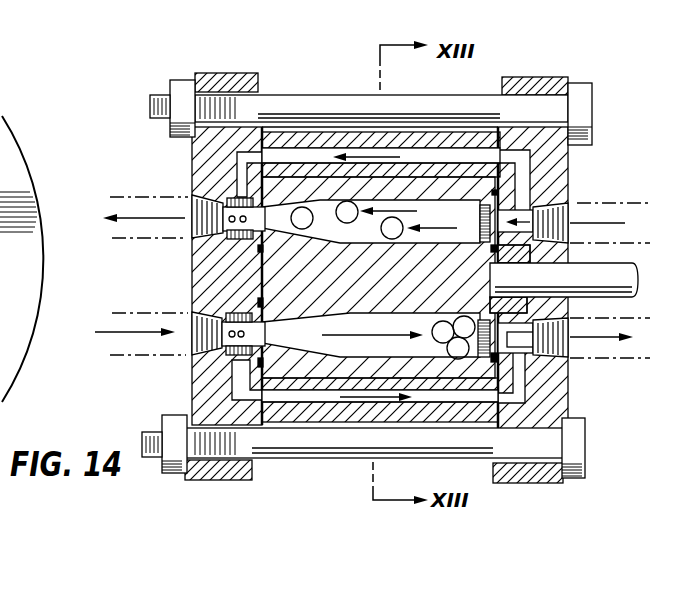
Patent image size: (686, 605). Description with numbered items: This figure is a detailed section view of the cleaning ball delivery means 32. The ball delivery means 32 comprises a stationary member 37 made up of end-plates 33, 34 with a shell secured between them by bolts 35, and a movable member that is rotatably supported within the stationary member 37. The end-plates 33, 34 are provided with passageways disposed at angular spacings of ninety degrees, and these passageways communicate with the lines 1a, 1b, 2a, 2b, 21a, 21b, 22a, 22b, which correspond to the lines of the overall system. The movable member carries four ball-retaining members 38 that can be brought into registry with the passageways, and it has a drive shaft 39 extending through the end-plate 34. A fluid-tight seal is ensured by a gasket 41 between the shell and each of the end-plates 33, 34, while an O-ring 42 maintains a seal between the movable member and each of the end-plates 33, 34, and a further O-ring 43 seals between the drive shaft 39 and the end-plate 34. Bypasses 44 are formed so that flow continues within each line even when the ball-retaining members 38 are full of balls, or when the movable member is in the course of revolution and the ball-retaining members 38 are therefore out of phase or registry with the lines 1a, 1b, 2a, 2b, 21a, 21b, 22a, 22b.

The ball delivery means 32 is at (606, 64).
The end-plate 33 is at (223, 73).
The end-plate 34 is at (552, 77).
The bolts 35 is at (297, 102).
The stationary member 37 is at (578, 84).
The ball-retaining members 38 is at (441, 240).
The drive shaft 39 is at (622, 280).
The gasket 41 is at (255, 410).
The O-ring 42 is at (495, 367).
The O-ring 43 is at (517, 260).
The bypasses 44 is at (340, 398).
The line 1a is at (574, 213).
The line 1b is at (184, 207).
The line 2a is at (180, 322).
The line 2b is at (576, 354).
The line 21a is at (180, 312).
The line 21b is at (587, 366).
The line 22a is at (583, 187).
The line 22b is at (182, 198).